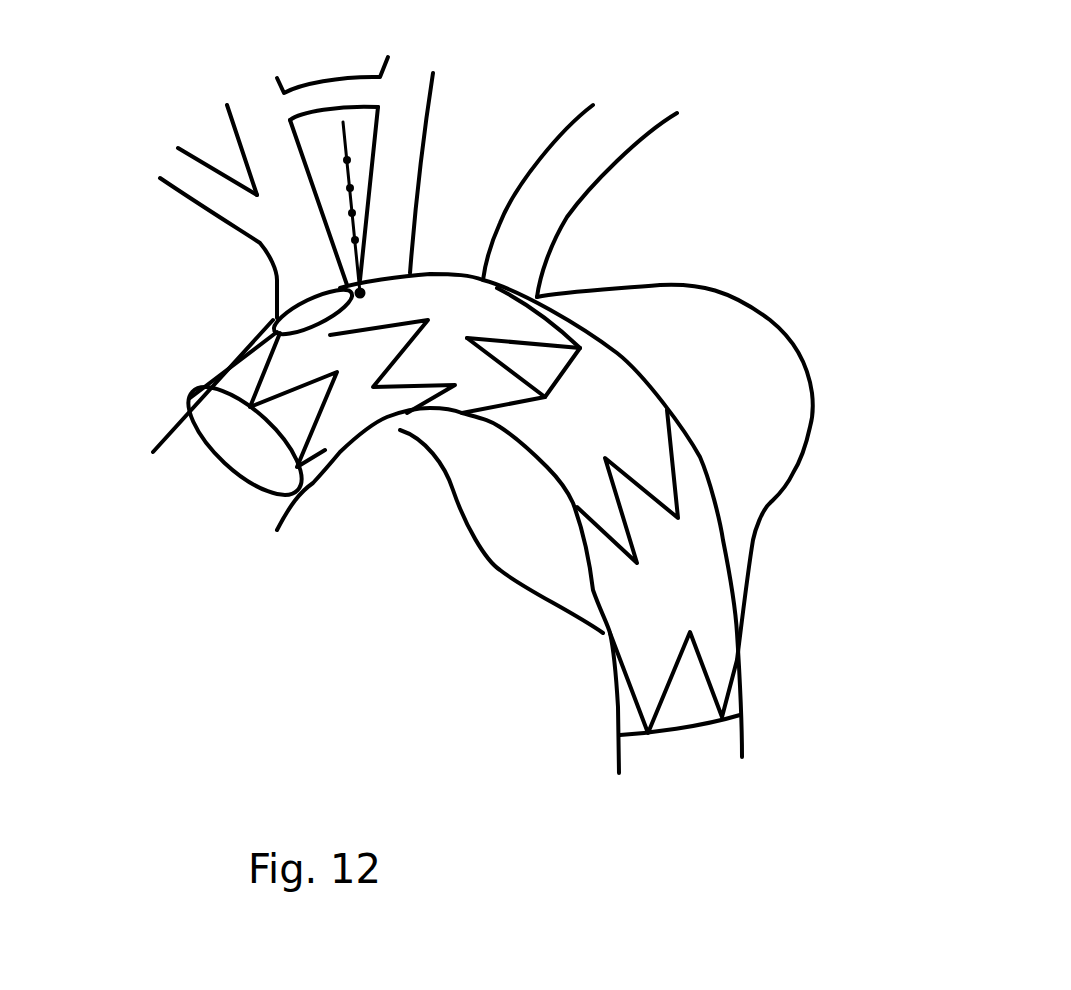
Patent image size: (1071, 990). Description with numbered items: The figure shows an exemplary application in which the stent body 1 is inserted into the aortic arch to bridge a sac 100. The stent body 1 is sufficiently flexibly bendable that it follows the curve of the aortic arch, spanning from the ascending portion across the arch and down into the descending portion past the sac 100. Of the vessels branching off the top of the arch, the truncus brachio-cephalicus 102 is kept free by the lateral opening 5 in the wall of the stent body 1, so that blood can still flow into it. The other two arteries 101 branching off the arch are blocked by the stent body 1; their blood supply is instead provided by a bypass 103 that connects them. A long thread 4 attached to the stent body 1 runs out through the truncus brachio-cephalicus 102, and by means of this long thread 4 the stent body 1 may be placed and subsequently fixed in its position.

The stent body 1 is at (662, 553).
The long thread 4 is at (340, 152).
The lateral opening 5 is at (308, 312).
The sac 100 is at (745, 357).
The arteries 101 is at (523, 172).
The truncus brachio-cephalicus 102 is at (263, 248).
The bypass 103 is at (332, 92).